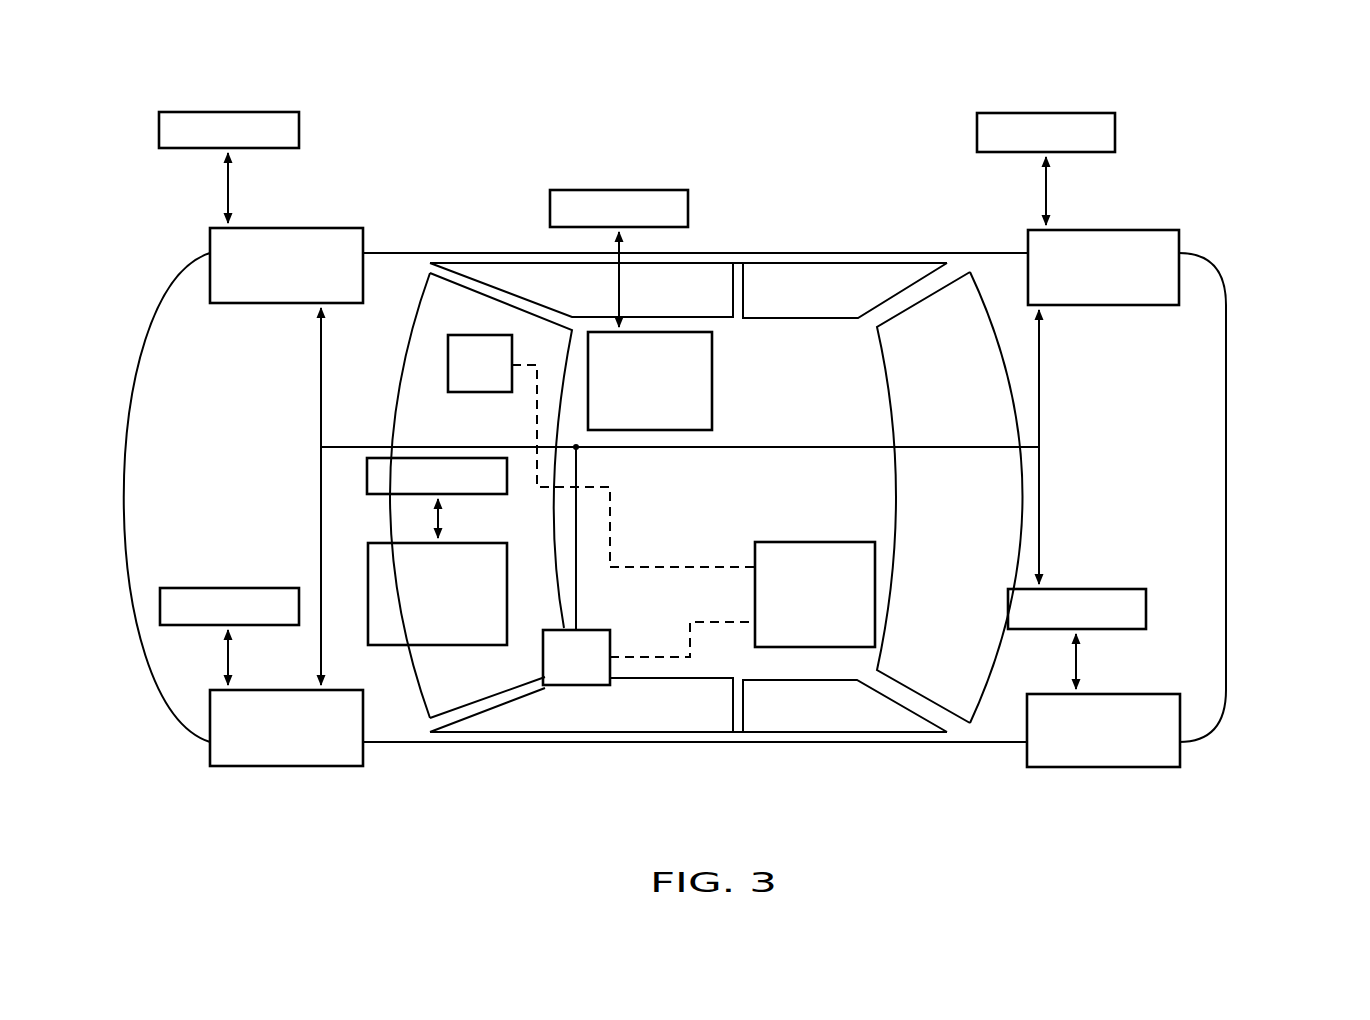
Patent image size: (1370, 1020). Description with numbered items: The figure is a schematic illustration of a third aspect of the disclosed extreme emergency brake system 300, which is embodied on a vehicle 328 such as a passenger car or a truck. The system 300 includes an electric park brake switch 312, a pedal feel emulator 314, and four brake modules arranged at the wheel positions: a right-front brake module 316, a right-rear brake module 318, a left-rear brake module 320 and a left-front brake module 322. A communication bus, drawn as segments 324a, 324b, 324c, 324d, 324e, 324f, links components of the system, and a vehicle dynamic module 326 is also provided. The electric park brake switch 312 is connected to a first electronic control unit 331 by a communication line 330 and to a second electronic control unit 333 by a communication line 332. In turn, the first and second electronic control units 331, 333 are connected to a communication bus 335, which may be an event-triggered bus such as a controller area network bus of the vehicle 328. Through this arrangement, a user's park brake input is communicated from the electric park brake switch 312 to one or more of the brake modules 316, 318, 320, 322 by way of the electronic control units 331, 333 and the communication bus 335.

The extreme emergency brake system 300 is at (1222, 132).
The electric park brake switch 312 is at (812, 542).
The pedal feel emulator 314 is at (438, 647).
The brake module 316 is at (342, 228).
The brake module 318 is at (1157, 230).
The brake module 320 is at (1137, 767).
The brake module 322 is at (315, 767).
The communication bus 324a is at (224, 112).
The communication bus 324b is at (622, 190).
The communication bus 324c is at (1032, 113).
The communication bus 324d is at (1110, 589).
The communication bus 324e is at (212, 588).
The communication bus 324f is at (456, 498).
The vehicle dynamic module 326 is at (712, 378).
The vehicle 328 is at (1226, 410).
The communication line 330 is at (614, 520).
The first electronic control unit 331 is at (508, 392).
The communication line 332 is at (746, 617).
The second electronic control unit 333 is at (595, 630).
The communication bus 335 is at (836, 447).